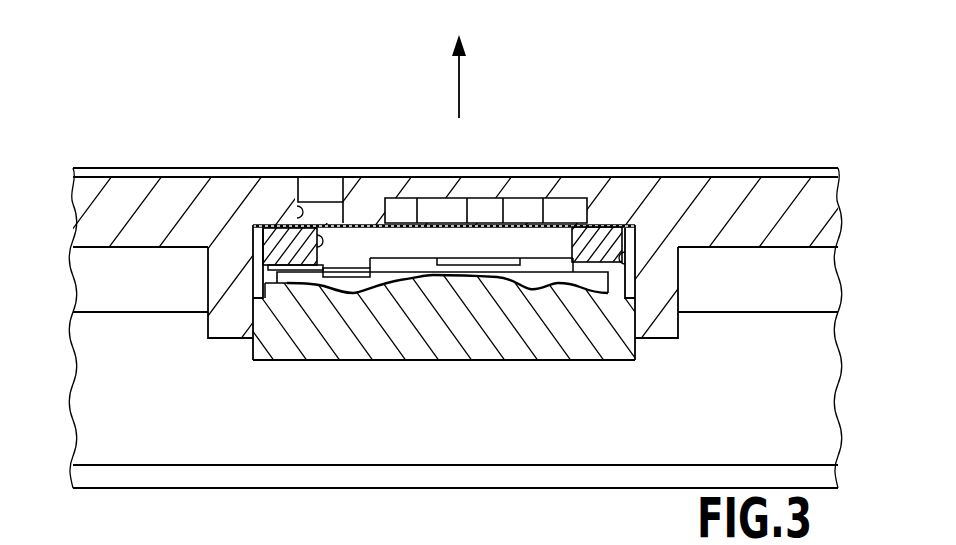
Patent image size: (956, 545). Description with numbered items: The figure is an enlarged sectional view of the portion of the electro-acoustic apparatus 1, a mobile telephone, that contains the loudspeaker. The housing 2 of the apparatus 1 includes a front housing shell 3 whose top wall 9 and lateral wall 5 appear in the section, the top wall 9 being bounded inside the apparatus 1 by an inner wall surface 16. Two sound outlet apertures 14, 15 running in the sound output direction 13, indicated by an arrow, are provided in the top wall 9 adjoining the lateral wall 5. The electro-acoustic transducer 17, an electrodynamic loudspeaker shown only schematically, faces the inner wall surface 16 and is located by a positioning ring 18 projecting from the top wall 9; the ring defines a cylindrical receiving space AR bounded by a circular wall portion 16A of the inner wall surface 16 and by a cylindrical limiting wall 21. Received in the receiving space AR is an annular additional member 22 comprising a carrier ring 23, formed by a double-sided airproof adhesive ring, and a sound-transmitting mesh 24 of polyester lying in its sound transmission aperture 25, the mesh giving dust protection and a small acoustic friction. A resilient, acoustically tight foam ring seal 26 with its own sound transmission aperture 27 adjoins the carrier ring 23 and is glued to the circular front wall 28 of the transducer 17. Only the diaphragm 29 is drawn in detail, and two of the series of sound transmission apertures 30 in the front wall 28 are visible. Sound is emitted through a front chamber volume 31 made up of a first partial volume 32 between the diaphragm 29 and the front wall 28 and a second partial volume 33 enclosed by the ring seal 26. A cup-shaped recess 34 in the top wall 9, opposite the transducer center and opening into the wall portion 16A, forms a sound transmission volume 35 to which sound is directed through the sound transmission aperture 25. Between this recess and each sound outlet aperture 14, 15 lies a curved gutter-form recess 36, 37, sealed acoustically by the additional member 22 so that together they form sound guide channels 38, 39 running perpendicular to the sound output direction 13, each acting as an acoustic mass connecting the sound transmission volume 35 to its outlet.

The electro-acoustic apparatus 1 is at (724, 118).
The housing 2 is at (348, 496).
The front housing shell 3 is at (140, 169).
The lateral wall 5 is at (108, 322).
The top wall 9 is at (768, 200).
The sound output direction 13 is at (460, 90).
The sound outlet aperture 14 is at (588, 196).
The sound outlet aperture 15 is at (308, 188).
The inner wall surface 16 is at (137, 248).
The circular wall portion 16A is at (608, 221).
The electro-acoustic transducer 17 is at (608, 361).
The positioning ring 18 is at (657, 316).
The cylindrical limiting wall 21 is at (628, 282).
The annular additional member 22 is at (428, 217).
The carrier ring 23 is at (637, 232).
The sound-transmitting mesh 24 is at (508, 243).
The sound transmission aperture 25 is at (382, 225).
The ring seal 26 is at (285, 239).
The sound transmission aperture 27 is at (288, 283).
The front wall 28 is at (433, 263).
The diaphragm 29 is at (522, 288).
The sound transmission apertures 30 is at (360, 268).
The front chamber volume 31 is at (564, 247).
The first partial volume 32 is at (288, 285).
The second partial volume 33 is at (337, 243).
The cup-shaped recess 34 is at (390, 210).
The sound transmission volume 35 is at (479, 209).
The gutter-form recess 36 is at (563, 210).
The gutter-form recess 37 is at (298, 200).
The sound guide channel 38 is at (537, 229).
The sound guide channel 39 is at (318, 210).
The receiving space AR is at (630, 268).